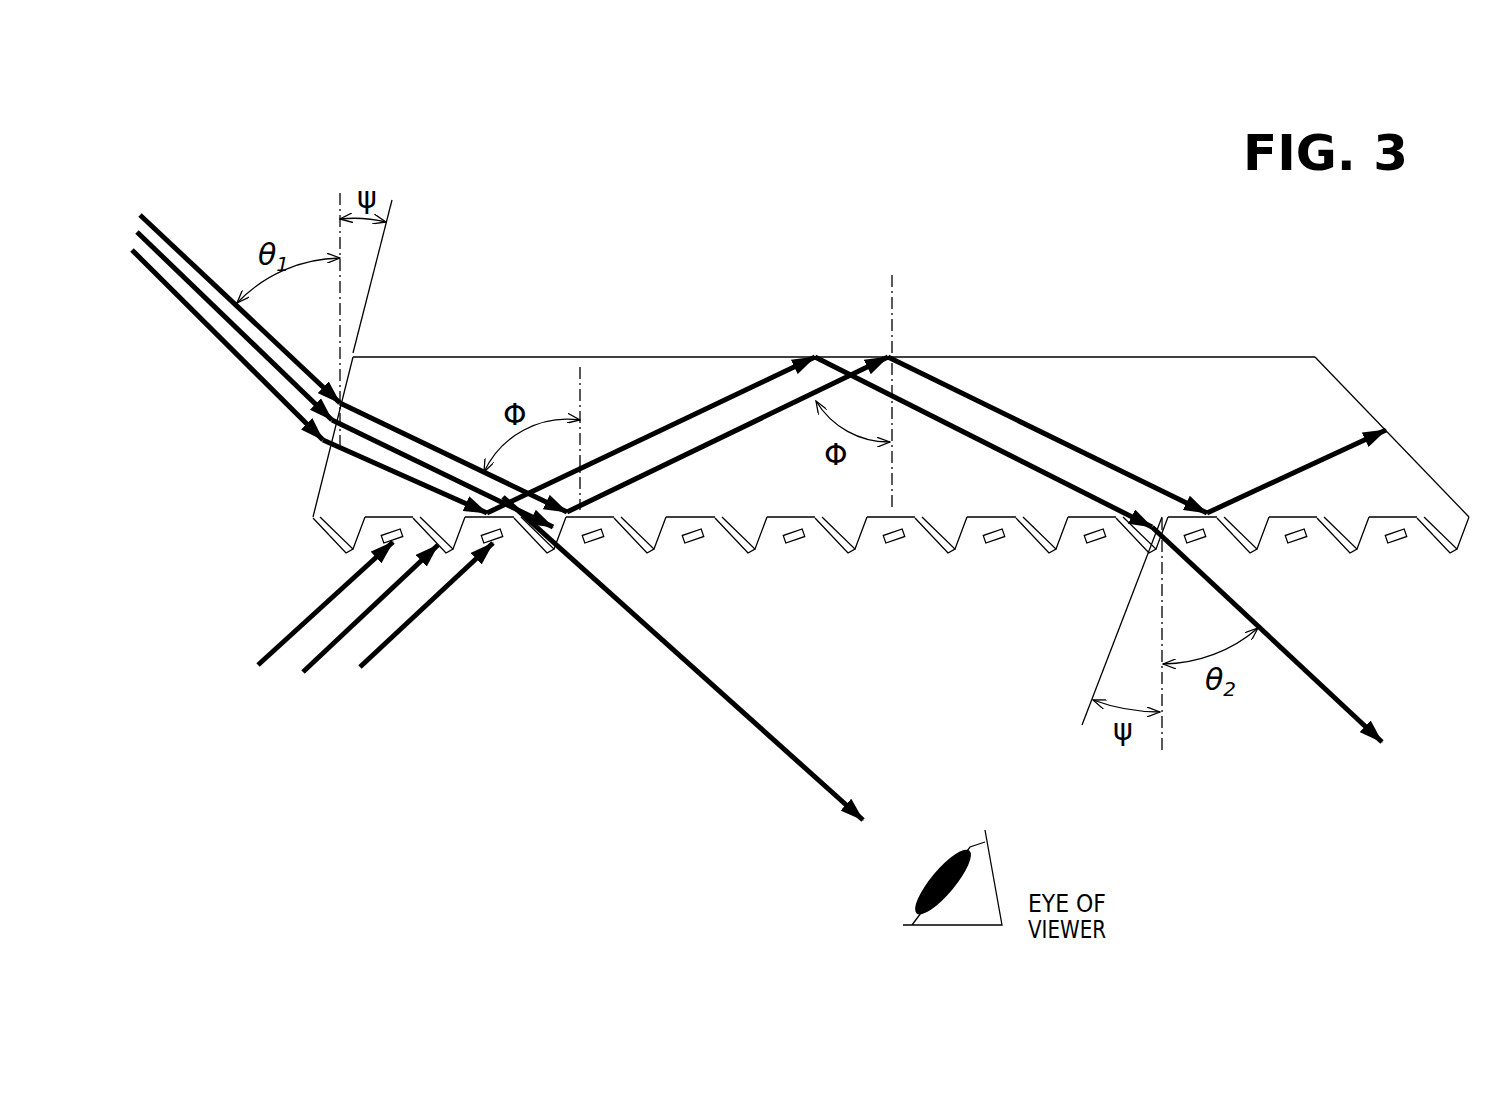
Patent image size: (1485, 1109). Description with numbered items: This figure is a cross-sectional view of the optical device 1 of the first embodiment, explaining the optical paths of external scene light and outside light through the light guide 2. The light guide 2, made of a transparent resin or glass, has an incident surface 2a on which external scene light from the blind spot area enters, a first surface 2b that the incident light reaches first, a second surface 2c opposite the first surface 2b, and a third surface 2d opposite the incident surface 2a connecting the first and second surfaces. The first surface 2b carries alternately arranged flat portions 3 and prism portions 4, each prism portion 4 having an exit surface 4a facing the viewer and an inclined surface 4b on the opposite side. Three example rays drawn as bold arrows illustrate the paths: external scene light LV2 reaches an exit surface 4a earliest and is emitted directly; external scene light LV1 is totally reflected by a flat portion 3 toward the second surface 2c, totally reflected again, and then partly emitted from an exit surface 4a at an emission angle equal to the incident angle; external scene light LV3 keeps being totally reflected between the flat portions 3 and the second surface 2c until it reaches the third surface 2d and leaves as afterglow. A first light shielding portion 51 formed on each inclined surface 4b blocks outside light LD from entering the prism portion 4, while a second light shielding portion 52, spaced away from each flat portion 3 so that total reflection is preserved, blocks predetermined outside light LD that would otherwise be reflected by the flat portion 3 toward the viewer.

The optical device 1 is at (1130, 208).
The light guide 2 is at (1160, 392).
The incident surface 2a is at (320, 487).
The first surface 2b is at (587, 674).
The second surface 2c is at (678, 357).
The third surface 2d is at (1417, 465).
The flat portion 3 is at (513, 518).
The prism portion 4 is at (618, 634).
The exit surface 4a is at (565, 547).
The inclined surface 4b is at (535, 547).
The first light shielding portion 51 is at (728, 552).
The second light shielding portion 52 is at (497, 543).
The outside light LD is at (396, 657).
The external scene light LV1 is at (152, 272).
The external scene light LV2 is at (137, 234).
The external scene light LV3 is at (173, 240).